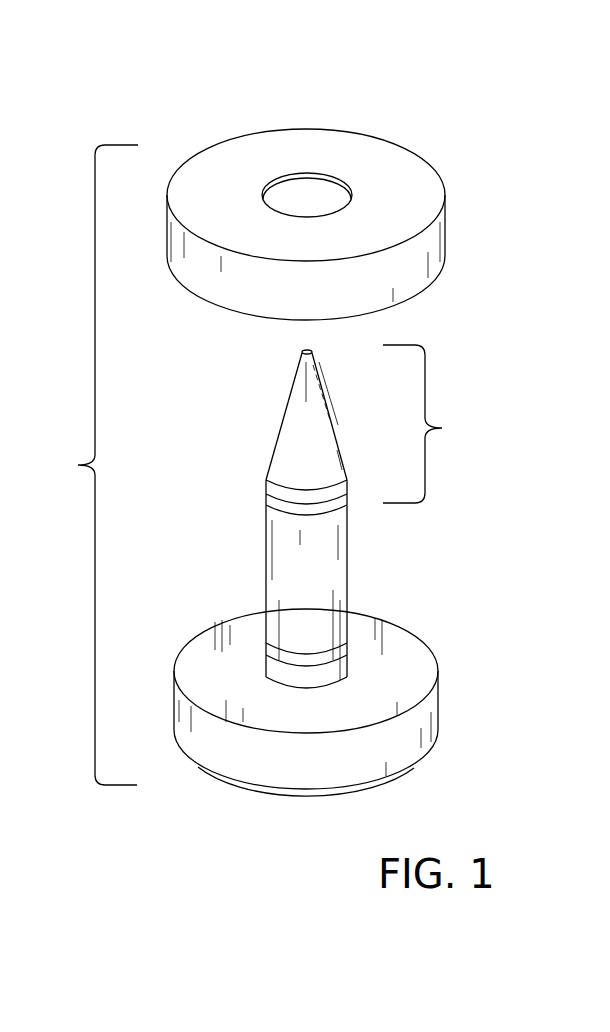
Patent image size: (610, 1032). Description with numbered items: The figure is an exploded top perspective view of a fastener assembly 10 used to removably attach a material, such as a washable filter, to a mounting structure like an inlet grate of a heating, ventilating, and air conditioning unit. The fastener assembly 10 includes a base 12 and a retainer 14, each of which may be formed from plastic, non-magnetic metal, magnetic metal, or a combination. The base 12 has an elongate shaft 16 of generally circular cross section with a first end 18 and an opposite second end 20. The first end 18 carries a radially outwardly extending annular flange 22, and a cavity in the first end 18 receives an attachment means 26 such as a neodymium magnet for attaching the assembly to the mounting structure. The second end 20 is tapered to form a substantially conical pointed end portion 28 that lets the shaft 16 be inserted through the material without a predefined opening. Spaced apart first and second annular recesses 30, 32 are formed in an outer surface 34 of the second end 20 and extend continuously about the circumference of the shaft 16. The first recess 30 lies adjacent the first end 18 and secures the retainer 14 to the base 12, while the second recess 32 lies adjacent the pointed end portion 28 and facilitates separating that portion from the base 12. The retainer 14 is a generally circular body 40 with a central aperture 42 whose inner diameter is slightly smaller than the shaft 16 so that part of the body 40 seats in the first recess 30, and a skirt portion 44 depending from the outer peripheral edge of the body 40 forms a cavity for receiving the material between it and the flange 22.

The fastener assembly 10 is at (93, 465).
The base 12 is at (321, 506).
The retainer 14 is at (328, 202).
The shaft 16 is at (266, 570).
The first end 18 is at (275, 672).
The second end 20 is at (305, 350).
The annular flange 22 is at (272, 731).
The attachment means 26 is at (305, 795).
The pointed end portion 28 is at (370, 424).
The first annular recess 30 is at (300, 648).
The second annular recess 32 is at (266, 493).
The outer surface 34 is at (265, 612).
The body 40 is at (235, 190).
The central aperture 42 is at (292, 183).
The skirt portion 44 is at (447, 222).